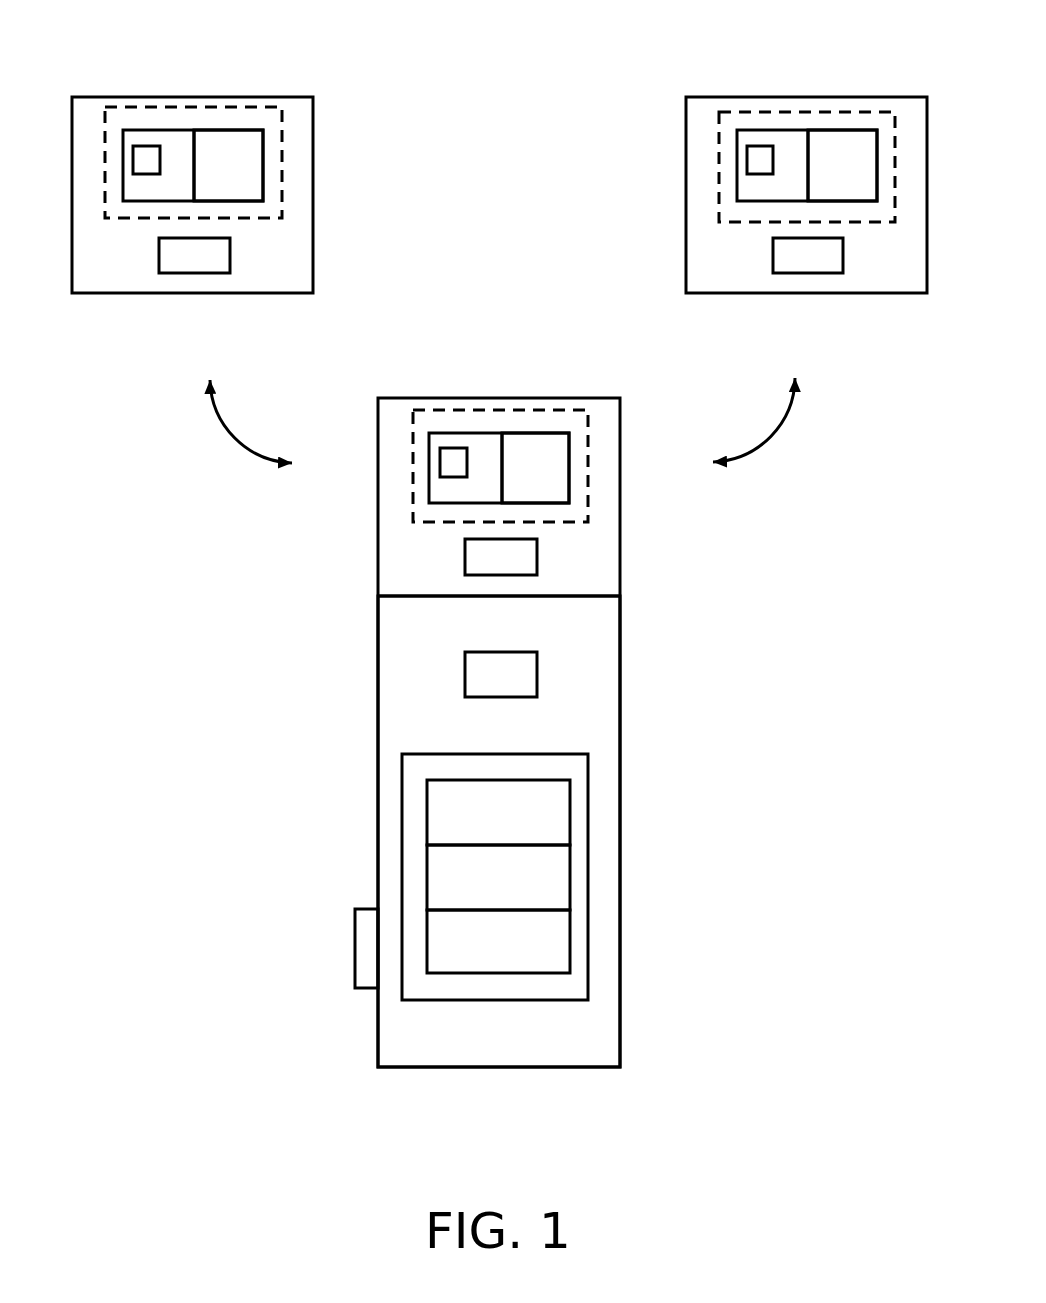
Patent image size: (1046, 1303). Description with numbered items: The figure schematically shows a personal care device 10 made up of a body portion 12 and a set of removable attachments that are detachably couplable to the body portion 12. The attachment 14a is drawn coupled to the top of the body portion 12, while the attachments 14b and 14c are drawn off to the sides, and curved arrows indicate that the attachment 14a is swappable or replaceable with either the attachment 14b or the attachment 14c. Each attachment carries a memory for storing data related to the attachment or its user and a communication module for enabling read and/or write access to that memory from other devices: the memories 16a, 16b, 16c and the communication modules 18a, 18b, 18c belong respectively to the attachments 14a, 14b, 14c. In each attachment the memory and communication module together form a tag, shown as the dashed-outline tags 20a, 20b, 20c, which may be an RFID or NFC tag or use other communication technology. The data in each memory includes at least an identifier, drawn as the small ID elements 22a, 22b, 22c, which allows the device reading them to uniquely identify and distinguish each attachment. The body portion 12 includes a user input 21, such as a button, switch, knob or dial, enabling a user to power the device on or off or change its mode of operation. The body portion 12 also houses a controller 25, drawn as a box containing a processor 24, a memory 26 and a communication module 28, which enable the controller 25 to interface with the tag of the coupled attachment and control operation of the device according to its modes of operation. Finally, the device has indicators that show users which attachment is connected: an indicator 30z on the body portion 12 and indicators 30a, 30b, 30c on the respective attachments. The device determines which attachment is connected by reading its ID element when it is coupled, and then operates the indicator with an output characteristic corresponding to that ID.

The personal care device 10 is at (243, 637).
The body portion 12 is at (400, 1027).
The attachment 14a is at (570, 380).
The attachment 14b is at (308, 82).
The attachment 14c is at (683, 78).
The memory 16a is at (477, 440).
The memory 16b is at (183, 137).
The memory 16c is at (785, 137).
The communication module 18a is at (557, 468).
The communication module 18b is at (250, 164).
The communication module 18c is at (865, 164).
The tag 20a is at (412, 440).
The tag 20b is at (128, 106).
The tag 20c is at (875, 110).
The user input 21 is at (367, 942).
The ID element 22a is at (443, 468).
The ID element 22b is at (146, 164).
The ID element 22c is at (758, 165).
The processor 24 is at (557, 811).
The controller 25 is at (573, 988).
The memory 26 is at (447, 869).
The communication module 28 is at (557, 942).
The indicator 30a is at (525, 559).
The indicator 30z is at (525, 673).
The indicator 30b is at (199, 255).
The indicator 30c is at (813, 255).